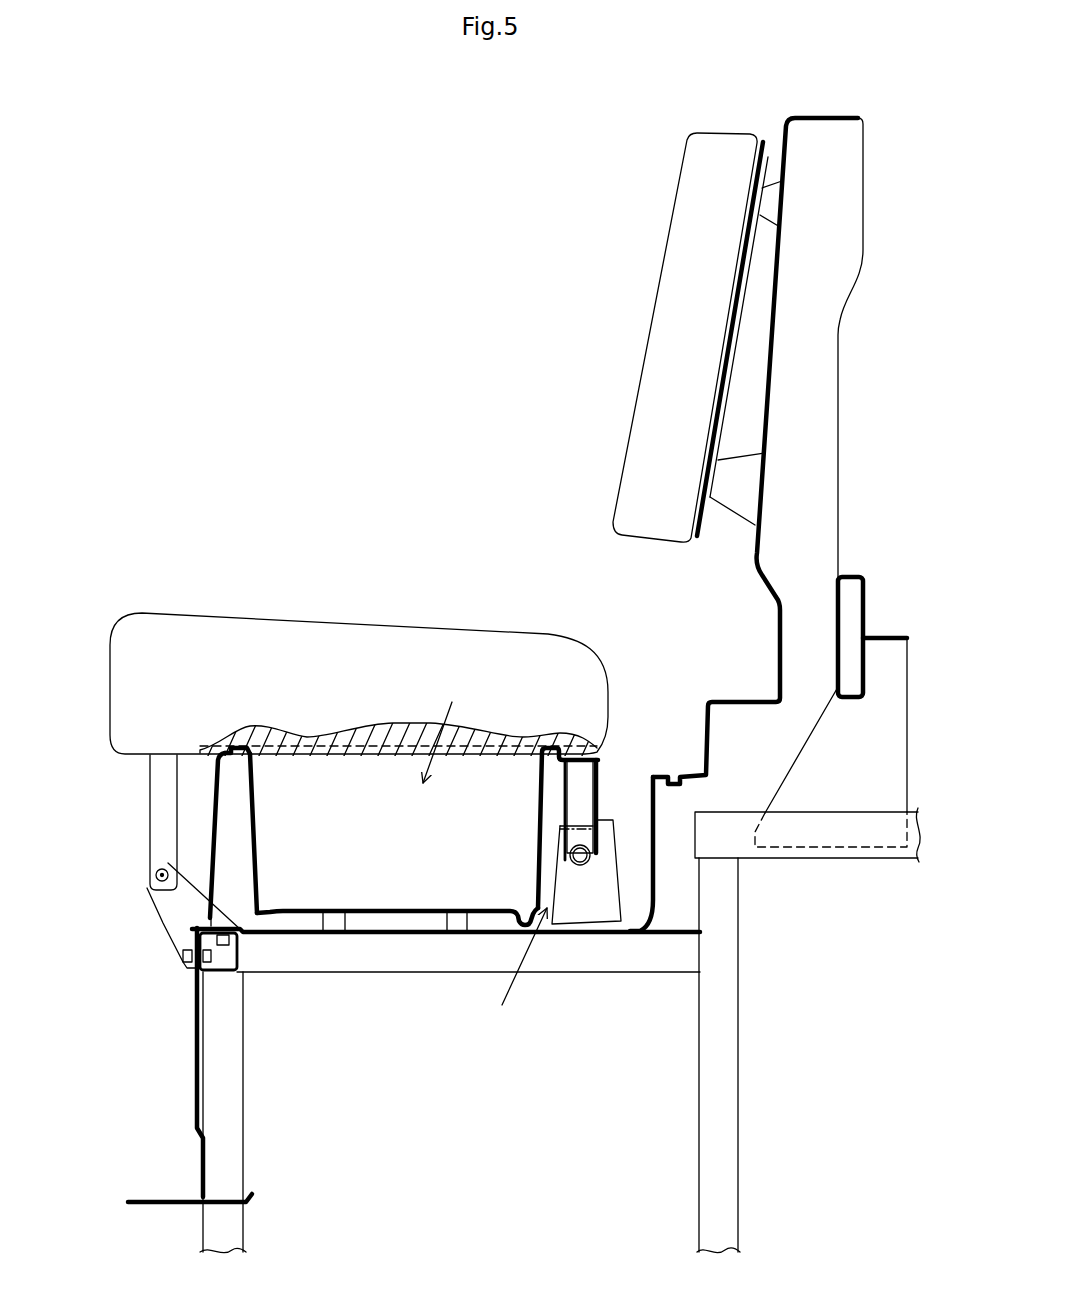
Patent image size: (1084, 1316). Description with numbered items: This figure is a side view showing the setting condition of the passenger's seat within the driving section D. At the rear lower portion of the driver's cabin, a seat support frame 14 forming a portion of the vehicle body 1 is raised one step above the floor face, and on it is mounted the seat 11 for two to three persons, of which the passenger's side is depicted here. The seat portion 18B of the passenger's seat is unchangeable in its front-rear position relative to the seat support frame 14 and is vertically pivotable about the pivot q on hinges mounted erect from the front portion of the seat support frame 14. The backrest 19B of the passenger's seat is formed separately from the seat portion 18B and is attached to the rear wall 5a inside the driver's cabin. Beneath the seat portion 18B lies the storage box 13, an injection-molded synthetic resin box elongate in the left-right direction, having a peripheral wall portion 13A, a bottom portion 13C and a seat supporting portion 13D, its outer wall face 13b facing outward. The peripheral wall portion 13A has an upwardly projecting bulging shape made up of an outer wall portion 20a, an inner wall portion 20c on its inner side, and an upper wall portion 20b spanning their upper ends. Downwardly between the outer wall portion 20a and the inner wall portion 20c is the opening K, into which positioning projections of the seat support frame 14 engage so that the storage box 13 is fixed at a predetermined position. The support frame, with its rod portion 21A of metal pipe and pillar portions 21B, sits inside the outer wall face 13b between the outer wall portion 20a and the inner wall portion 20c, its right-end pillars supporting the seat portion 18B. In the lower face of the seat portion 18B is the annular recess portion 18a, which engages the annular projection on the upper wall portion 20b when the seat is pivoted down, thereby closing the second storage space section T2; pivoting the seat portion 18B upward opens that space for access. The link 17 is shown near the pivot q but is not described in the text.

The driving section D is at (378, 302).
The seat 11 is at (417, 523).
The backrest of the passenger's seat 19B is at (667, 327).
The seat portion of the passenger's seat 18B is at (473, 642).
The rear wall 5a is at (753, 552).
The vehicle body 1 is at (889, 637).
The storage box 13 is at (636, 898).
The peripheral wall portion 13A is at (259, 818).
The outer wall face 13b is at (603, 802).
The bottom portion 13C is at (308, 908).
The seat supporting portion 13D is at (602, 753).
The outer wall portion 20a is at (212, 785).
The upper wall portion 20b is at (243, 743).
The inner wall portion 20c is at (258, 787).
The annular recess portion 18a is at (542, 778).
The pillar portion 21B is at (560, 830).
The rod portion 21A is at (578, 868).
The second storage space section T2 is at (450, 729).
The opening K is at (518, 972).
The pivot q is at (156, 875).
The link arm 17 is at (162, 922).
The seat support frame 14 is at (190, 1038).